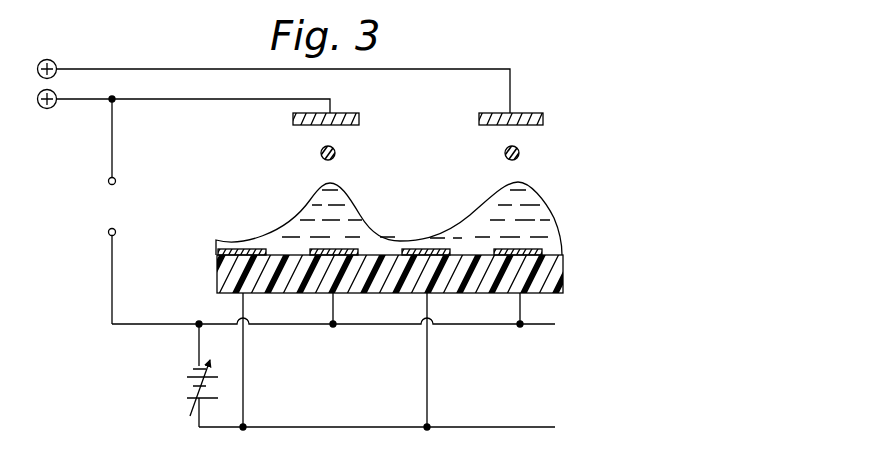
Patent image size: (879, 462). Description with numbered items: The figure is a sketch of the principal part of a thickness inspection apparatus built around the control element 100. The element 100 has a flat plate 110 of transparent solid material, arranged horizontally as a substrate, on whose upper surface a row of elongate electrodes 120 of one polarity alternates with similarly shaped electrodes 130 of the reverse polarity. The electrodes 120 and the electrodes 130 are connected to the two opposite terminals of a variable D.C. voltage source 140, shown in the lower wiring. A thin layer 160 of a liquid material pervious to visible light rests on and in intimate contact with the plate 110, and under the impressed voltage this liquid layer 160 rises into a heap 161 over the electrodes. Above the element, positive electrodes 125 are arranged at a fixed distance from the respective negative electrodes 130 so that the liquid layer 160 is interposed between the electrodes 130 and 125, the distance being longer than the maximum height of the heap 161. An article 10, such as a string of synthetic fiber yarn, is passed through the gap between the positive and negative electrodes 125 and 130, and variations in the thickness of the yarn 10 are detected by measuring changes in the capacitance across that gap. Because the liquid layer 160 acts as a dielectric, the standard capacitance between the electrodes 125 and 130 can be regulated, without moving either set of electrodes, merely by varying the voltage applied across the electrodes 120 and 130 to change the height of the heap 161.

The control element 100 is at (230, 233).
The flat plate 110 is at (550, 270).
The elongate electrodes 120 is at (432, 248).
The positive electrodes 125 is at (332, 113).
The electrodes of reverse polarity 130 is at (318, 254).
The D.C. voltage source 140 is at (186, 396).
The liquid layer 160 is at (545, 222).
The heap 161 is at (320, 196).
The article (yarn) 10 is at (338, 153).